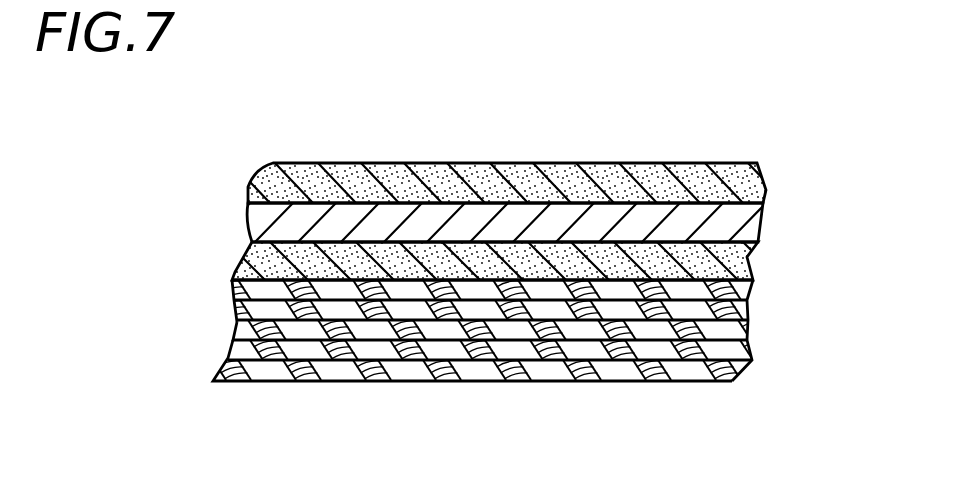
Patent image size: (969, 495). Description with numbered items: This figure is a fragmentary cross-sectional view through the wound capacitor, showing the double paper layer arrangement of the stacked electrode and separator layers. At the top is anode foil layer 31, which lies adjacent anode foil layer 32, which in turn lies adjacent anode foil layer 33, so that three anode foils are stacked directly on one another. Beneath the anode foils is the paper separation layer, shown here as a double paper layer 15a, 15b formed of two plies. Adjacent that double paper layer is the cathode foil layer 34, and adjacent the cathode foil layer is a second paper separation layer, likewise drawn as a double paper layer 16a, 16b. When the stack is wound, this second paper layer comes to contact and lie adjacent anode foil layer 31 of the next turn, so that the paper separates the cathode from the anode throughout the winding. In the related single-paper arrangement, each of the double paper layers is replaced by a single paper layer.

The anode foil layer 31 is at (252, 183).
The anode foil layer 32 is at (248, 222).
The anode foil layer 33 is at (238, 265).
The double paper layer 15a is at (230, 300).
The double paper layer 15b is at (747, 313).
The cathode foil layer 34 is at (237, 327).
The double paper layer 16a is at (227, 352).
The double paper layer 16b is at (740, 372).